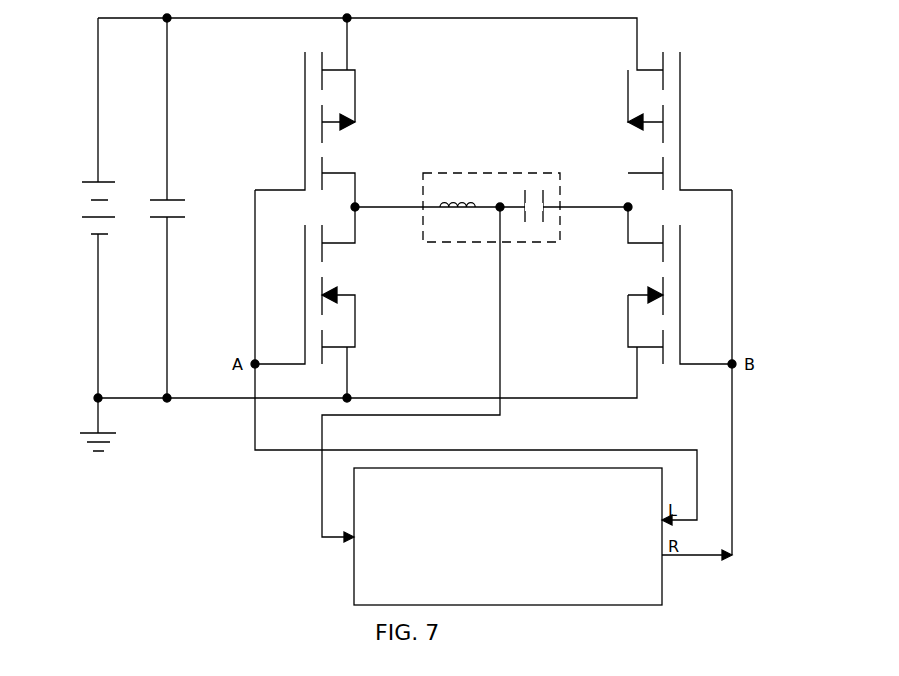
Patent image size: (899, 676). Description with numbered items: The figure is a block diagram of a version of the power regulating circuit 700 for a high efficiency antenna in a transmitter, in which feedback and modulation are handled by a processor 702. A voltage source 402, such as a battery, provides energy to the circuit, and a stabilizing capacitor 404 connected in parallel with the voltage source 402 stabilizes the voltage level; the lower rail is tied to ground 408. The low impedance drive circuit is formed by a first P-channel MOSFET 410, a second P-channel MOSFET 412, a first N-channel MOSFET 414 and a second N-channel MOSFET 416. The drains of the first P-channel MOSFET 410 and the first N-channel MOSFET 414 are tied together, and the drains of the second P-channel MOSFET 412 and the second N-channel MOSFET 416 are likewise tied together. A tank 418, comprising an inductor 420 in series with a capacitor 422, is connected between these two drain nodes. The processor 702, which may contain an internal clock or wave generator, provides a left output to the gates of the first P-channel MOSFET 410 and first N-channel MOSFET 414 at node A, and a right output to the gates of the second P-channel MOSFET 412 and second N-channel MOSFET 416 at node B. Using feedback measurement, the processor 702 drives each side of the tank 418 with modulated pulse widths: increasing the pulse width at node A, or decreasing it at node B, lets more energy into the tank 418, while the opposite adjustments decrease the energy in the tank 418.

The power regulating circuit 700 is at (737, 38).
The voltage source 402 is at (122, 146).
The stabilizing capacitor 404 is at (181, 200).
The ground 408 is at (80, 433).
The first P-channel MOSFET 410 is at (380, 140).
The second P-channel MOSFET 412 is at (606, 140).
The first N-channel MOSFET 414 is at (380, 305).
The second N-channel MOSFET 416 is at (606, 305).
The tank 418 is at (512, 186).
The inductor 420 is at (445, 206).
The capacitor 422 is at (548, 203).
The processor 702 is at (354, 592).